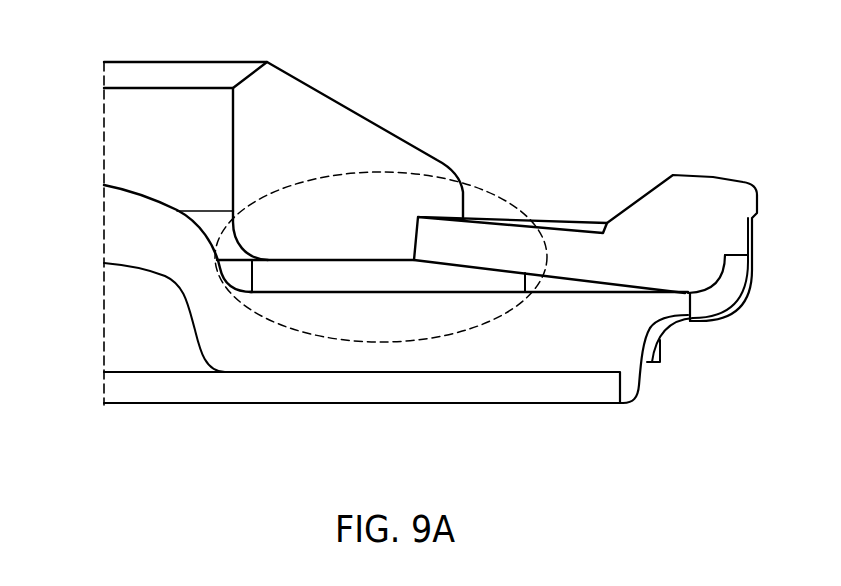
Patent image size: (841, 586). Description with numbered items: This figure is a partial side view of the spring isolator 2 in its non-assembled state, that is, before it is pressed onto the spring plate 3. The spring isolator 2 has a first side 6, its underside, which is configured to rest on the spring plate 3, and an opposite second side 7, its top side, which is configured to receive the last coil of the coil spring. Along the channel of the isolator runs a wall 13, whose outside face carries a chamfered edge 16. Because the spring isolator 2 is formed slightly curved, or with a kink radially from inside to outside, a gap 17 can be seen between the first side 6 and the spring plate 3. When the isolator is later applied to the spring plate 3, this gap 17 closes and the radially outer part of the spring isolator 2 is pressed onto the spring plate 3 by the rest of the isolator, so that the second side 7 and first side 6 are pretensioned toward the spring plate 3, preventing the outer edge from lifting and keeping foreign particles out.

The spring isolator 2 is at (706, 192).
The spring plate 3 is at (618, 342).
The first side 6 is at (341, 262).
The second side 7 is at (580, 223).
The wall 13 is at (118, 135).
The chamfered edge 16 is at (142, 62).
The gap 17 is at (238, 307).